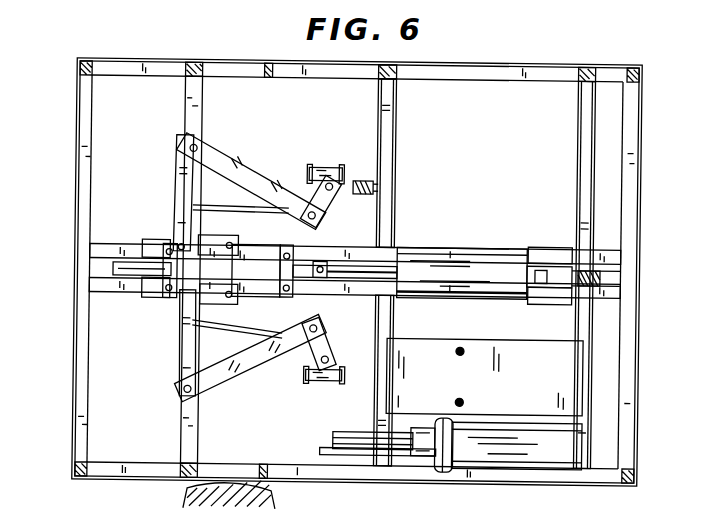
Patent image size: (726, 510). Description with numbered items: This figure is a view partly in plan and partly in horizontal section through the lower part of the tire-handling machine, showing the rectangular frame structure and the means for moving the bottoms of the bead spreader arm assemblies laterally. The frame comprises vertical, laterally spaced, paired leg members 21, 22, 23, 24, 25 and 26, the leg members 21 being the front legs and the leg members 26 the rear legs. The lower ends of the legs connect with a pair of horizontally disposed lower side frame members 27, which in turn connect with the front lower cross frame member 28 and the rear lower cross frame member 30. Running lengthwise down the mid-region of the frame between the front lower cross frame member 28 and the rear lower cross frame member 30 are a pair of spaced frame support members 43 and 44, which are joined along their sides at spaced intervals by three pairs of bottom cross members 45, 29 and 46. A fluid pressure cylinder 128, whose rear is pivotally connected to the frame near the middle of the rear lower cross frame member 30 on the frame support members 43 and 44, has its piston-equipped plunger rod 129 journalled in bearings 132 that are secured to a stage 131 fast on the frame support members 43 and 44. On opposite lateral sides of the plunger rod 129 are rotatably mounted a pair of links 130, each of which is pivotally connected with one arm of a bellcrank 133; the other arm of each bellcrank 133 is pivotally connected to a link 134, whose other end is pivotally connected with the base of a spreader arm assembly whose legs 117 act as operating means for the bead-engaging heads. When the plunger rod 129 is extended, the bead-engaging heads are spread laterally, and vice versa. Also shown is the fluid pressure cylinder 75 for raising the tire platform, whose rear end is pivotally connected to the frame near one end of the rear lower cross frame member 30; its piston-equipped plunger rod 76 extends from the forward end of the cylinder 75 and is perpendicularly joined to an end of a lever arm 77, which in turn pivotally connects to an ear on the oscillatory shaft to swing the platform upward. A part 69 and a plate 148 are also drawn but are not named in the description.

The front leg members 21 is at (75, 72).
The leg members 22 is at (197, 66).
The leg members 23 is at (265, 66).
The leg members 24 is at (395, 65).
The leg members 25 is at (484, 64).
The rear leg members 26 is at (637, 61).
The lower side frame members 27 is at (458, 79).
The front lower cross frame member 28 is at (74, 172).
The bottom cross members 29 is at (395, 164).
The rear lower cross frame member 30 is at (640, 175).
The frame support member 43 is at (109, 247).
The frame support member 44 is at (118, 298).
The bottom cross members 45 is at (195, 114).
The bottom cross members 46 is at (581, 142).
The roller 69 is at (271, 484).
The fluid pressure cylinder 75 is at (528, 458).
The piston-equipped plunger rod 76 is at (443, 444).
The lever arm 77 is at (347, 441).
The legs 117 is at (316, 165).
The fluid pressure cylinder 128 is at (461, 253).
The piston-equipped plunger rod 129 is at (394, 262).
The links 130 is at (212, 236).
The stage 131 is at (271, 293).
The bearings 132 is at (312, 256).
The bellcranks 133 is at (186, 189).
The link 134 is at (321, 196).
The mounting plate 148 is at (357, 182).